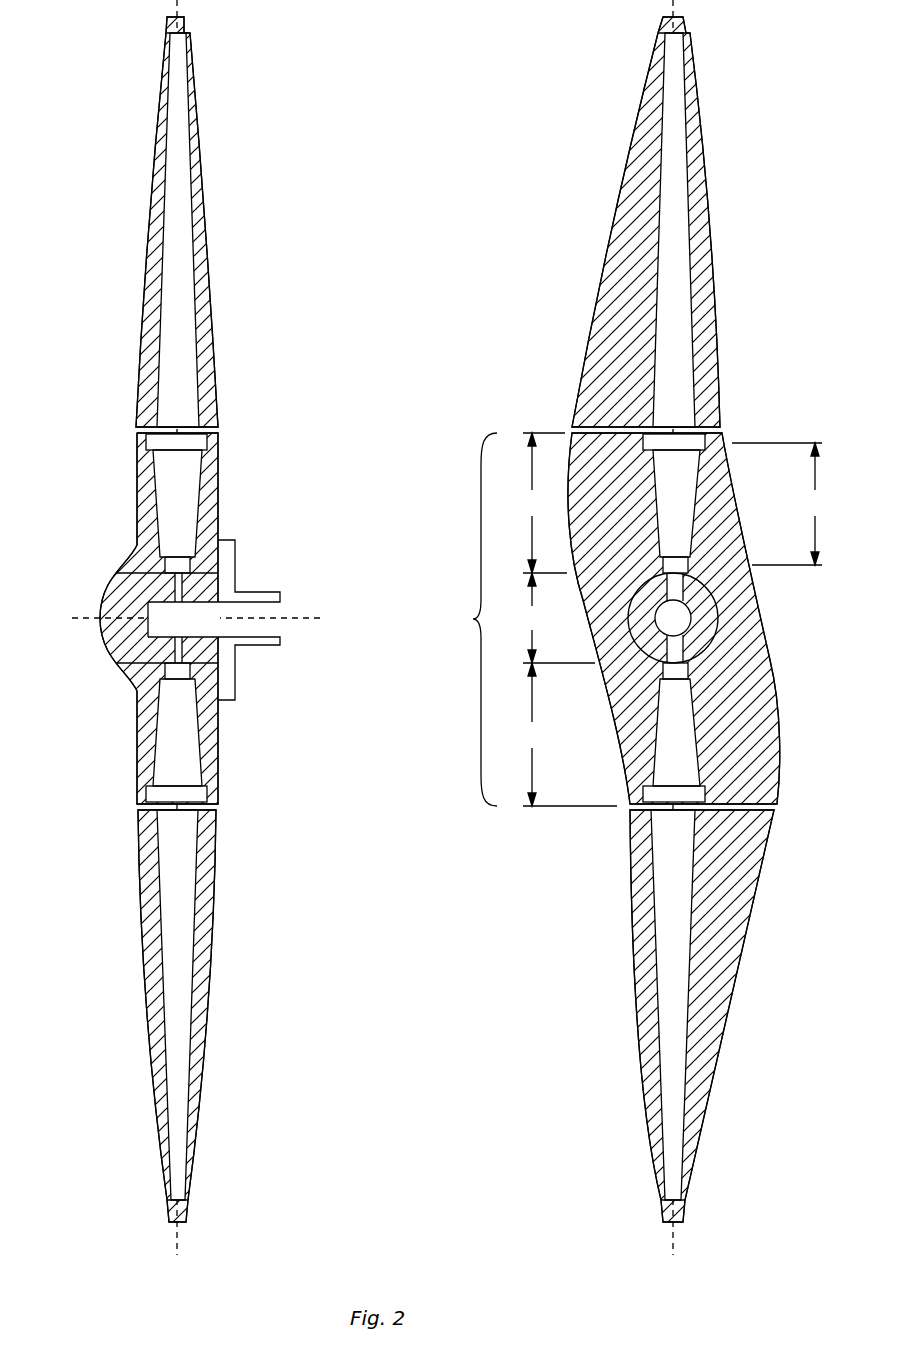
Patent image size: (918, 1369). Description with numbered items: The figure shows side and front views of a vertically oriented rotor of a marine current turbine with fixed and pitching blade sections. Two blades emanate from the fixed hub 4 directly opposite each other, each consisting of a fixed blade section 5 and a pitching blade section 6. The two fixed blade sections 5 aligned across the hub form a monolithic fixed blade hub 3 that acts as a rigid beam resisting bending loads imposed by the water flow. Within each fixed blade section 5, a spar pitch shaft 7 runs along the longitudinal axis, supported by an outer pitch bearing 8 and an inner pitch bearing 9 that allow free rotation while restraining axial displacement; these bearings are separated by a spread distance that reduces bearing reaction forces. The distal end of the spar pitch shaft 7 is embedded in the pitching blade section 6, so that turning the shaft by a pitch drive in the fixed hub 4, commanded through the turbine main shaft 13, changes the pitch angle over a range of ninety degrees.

The fixed blade hub 3 is at (475, 619).
The fixed hub 4 is at (110, 645).
The fixed blade section 5 is at (672, 619).
The pitching blade section 6 is at (216, 318).
The spar pitch shaft 7 is at (205, 217).
The outer pitch bearing 8 is at (137, 440).
The inner pitch bearing 9 is at (165, 566).
The turbine main shaft 13 is at (262, 650).